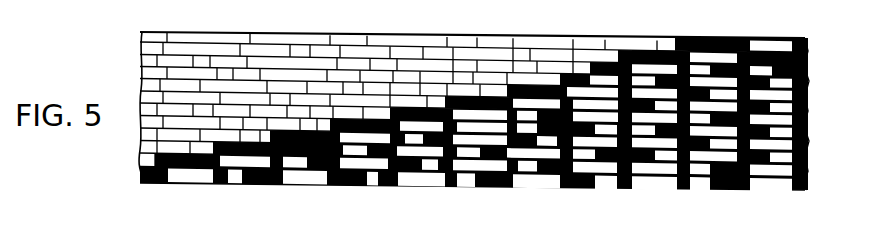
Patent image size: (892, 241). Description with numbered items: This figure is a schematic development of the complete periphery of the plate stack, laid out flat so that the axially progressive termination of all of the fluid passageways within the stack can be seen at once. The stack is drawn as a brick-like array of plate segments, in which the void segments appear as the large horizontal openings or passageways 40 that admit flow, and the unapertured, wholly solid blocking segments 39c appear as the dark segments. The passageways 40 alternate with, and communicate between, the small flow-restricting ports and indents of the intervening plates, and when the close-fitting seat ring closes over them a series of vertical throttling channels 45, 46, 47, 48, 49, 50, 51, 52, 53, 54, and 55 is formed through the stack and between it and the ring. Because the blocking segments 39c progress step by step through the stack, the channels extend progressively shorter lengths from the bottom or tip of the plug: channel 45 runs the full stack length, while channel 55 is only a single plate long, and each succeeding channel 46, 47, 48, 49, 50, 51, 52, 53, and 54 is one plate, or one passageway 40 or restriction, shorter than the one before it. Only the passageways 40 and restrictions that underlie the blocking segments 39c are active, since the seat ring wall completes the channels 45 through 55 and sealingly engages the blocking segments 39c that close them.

The solid blocking segment 39c is at (684, 32).
The large horizontal opening or passageway 40 is at (771, 29).
The throttling channel 45 is at (771, 199).
The throttling channel 46 is at (710, 199).
The throttling channel 47 is at (655, 198).
The throttling channel 48 is at (612, 199).
The throttling channel 49 is at (538, 197).
The throttling channel 50 is at (472, 197).
The throttling channel 51 is at (419, 197).
The throttling channel 52 is at (359, 196).
The throttling channel 53 is at (303, 195).
The throttling channel 54 is at (232, 195).
The throttling channel 55 is at (184, 195).